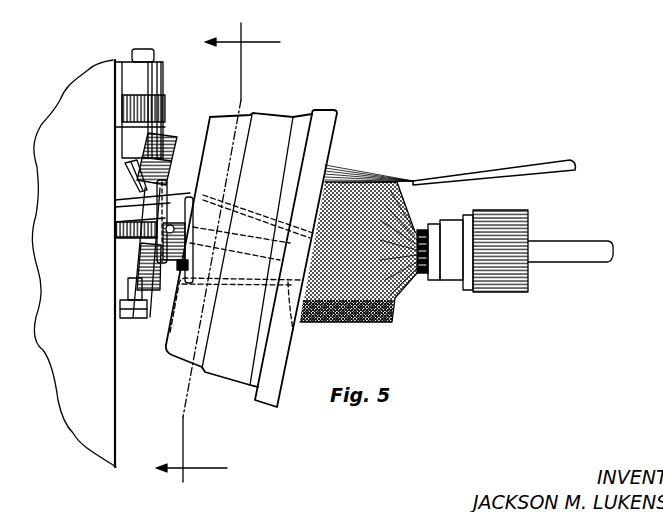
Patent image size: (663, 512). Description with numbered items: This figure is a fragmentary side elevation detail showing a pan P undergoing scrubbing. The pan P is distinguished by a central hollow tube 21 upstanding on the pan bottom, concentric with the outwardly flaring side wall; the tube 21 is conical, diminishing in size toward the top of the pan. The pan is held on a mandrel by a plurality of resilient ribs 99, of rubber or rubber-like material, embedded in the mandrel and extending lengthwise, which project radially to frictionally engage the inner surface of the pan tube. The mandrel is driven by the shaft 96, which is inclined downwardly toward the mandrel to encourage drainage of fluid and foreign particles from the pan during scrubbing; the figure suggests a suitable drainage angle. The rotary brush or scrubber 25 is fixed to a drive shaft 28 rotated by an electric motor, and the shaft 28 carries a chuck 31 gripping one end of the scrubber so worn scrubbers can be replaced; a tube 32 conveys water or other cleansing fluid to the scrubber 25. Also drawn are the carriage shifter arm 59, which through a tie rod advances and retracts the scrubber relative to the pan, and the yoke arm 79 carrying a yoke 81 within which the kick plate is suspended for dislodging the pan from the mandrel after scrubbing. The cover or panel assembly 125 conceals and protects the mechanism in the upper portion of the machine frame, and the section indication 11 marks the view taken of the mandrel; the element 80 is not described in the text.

The cover or panel assembly 125 is at (105, 407).
The carriage shifter arm 59 is at (153, 106).
The gear 80 is at (181, 165).
The yoke arm 79 is at (137, 173).
The shaft 96 is at (123, 212).
The yoke 81 is at (133, 320).
The pan P is at (332, 118).
The resilient ribs 99 is at (248, 252).
The central hollow tube 21 is at (296, 331).
The rotary brush or scrubber 25 is at (373, 322).
The tube 32 is at (434, 176).
The chuck 31 is at (502, 292).
The drive shaft 28 is at (587, 255).
The section line 11 is at (218, 255).